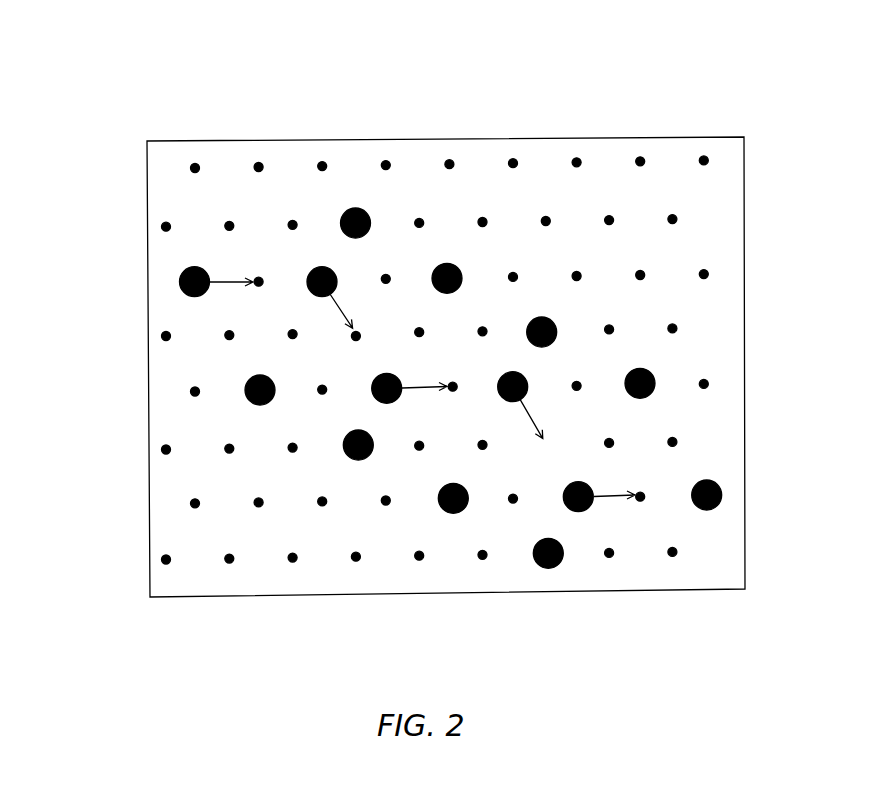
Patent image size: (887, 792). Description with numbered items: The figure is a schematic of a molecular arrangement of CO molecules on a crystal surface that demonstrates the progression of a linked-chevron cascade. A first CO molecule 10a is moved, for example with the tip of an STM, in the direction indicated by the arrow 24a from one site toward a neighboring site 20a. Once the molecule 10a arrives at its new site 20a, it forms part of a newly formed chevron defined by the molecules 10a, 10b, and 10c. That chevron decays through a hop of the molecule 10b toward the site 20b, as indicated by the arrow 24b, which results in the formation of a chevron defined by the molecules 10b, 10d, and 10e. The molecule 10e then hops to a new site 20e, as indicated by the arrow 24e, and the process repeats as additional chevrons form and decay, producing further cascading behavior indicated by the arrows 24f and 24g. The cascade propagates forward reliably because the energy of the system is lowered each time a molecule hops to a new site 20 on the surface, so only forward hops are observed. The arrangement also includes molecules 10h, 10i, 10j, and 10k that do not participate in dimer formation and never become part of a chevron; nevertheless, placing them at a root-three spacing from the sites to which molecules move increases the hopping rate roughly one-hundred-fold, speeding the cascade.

The site 20 is at (164, 448).
The first CO molecule 10a is at (180, 282).
The CO molecule 10b is at (321, 266).
The CO molecule 10c is at (362, 208).
The CO molecule 10d is at (345, 446).
The CO molecule 10e is at (387, 403).
The CO molecule 10h is at (652, 375).
The CO molecule 10i is at (461, 269).
The CO molecule 10j is at (453, 513).
The CO molecule 10k is at (245, 393).
The neighboring site 20a is at (257, 278).
The site 20b is at (358, 333).
The new site 20e is at (453, 383).
The arrow 24a is at (232, 281).
The arrow 24b is at (357, 331).
The arrow 24e is at (426, 396).
The arrow 24f is at (535, 413).
The arrow 24g is at (616, 493).